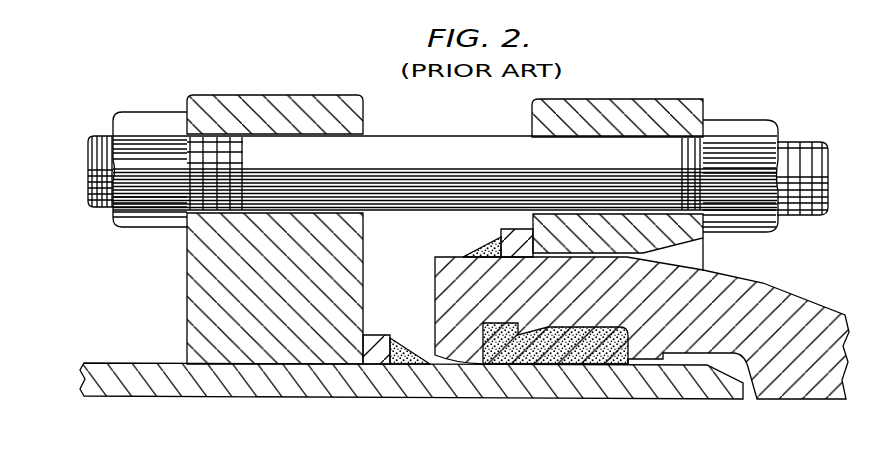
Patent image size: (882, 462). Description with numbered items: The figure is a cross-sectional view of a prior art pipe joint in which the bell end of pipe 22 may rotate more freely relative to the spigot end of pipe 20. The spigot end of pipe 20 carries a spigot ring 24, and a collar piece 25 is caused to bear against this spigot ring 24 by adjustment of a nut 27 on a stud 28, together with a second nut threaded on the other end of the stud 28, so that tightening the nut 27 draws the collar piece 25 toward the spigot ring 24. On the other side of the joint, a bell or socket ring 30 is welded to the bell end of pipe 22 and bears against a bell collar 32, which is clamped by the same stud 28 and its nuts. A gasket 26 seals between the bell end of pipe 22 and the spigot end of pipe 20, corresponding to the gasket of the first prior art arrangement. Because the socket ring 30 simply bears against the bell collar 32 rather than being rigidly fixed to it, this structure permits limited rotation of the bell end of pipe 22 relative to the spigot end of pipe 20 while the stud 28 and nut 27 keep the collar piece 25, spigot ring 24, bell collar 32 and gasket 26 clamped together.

The pipe 20 is at (318, 380).
The pipe 22 is at (800, 302).
The spigot ring 24 is at (377, 333).
The collar piece 25 is at (207, 278).
The gasket 26 is at (578, 366).
The nut 27 is at (143, 117).
The stud 28 is at (440, 148).
The bell ring 30 is at (510, 237).
The bell collar 32 is at (644, 116).